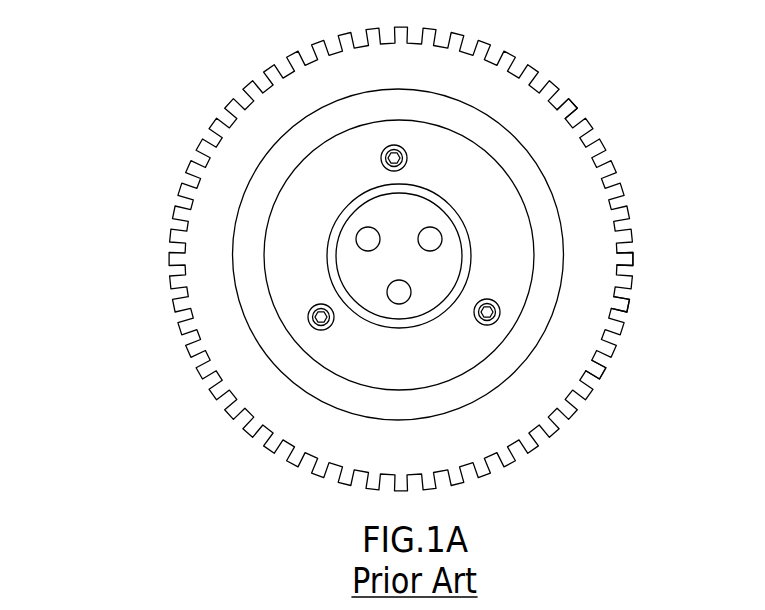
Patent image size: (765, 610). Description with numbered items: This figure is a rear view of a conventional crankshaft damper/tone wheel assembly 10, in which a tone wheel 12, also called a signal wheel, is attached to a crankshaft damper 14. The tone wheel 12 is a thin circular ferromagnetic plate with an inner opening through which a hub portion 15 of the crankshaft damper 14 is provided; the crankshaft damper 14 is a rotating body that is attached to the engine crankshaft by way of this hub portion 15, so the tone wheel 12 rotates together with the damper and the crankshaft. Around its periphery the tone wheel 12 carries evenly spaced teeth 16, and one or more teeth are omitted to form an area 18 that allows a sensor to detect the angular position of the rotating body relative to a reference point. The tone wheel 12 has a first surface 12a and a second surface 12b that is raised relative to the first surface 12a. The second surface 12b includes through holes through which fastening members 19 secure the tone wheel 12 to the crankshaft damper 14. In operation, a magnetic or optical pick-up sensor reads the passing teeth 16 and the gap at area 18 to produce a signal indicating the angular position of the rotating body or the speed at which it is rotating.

The crankshaft damper/tone wheel assembly 10 is at (104, 270).
The tone wheel 12 is at (597, 163).
The first surface 12a is at (590, 251).
The second surface 12b is at (337, 362).
The crankshaft damper 14 is at (620, 305).
The hub portion 15 is at (471, 242).
The teeth 16 is at (598, 380).
The area 18 is at (575, 107).
The fastening members 19 is at (406, 155).